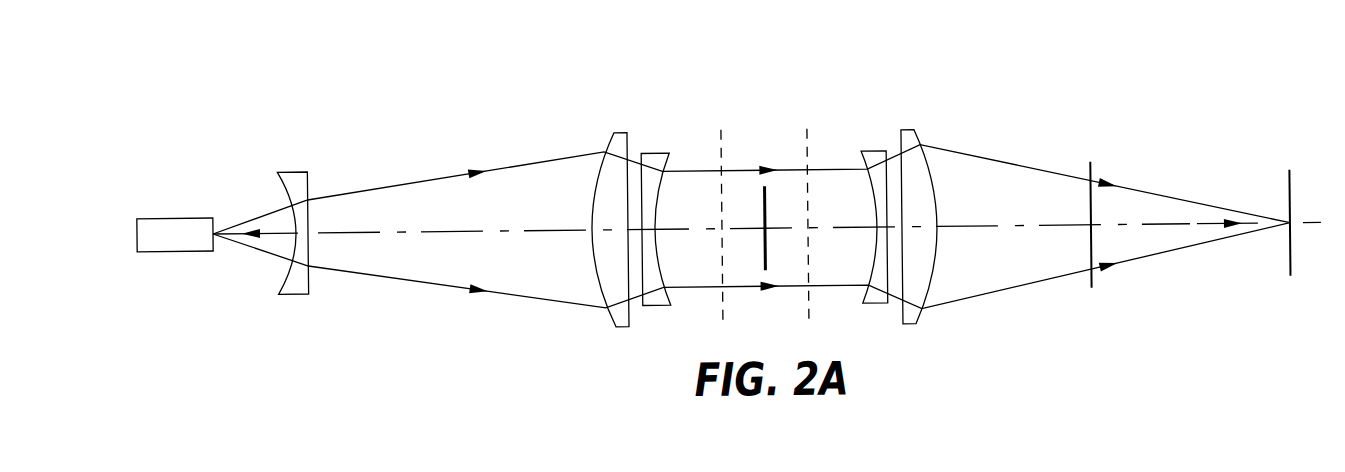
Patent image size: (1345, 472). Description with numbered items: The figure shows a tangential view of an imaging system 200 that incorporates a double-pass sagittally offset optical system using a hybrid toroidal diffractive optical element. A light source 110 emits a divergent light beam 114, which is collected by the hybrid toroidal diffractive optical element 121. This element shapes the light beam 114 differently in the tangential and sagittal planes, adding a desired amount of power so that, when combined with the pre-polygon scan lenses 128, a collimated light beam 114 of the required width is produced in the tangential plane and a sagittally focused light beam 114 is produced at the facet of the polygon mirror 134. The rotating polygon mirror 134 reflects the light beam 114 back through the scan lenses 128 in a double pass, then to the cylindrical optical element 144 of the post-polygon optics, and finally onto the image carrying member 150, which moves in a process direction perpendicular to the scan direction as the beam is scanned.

The imaging system 200 is at (1149, 59).
The light source 110 is at (153, 218).
The hybrid toroidal diffractive optical element 121 is at (293, 173).
The light beam 114 is at (265, 253).
The pre-polygon scan lenses 128 is at (670, 129).
The polygon mirror 134 is at (761, 199).
The cylindrical optical element 144 is at (1093, 183).
The image carrying member 150 is at (1288, 275).